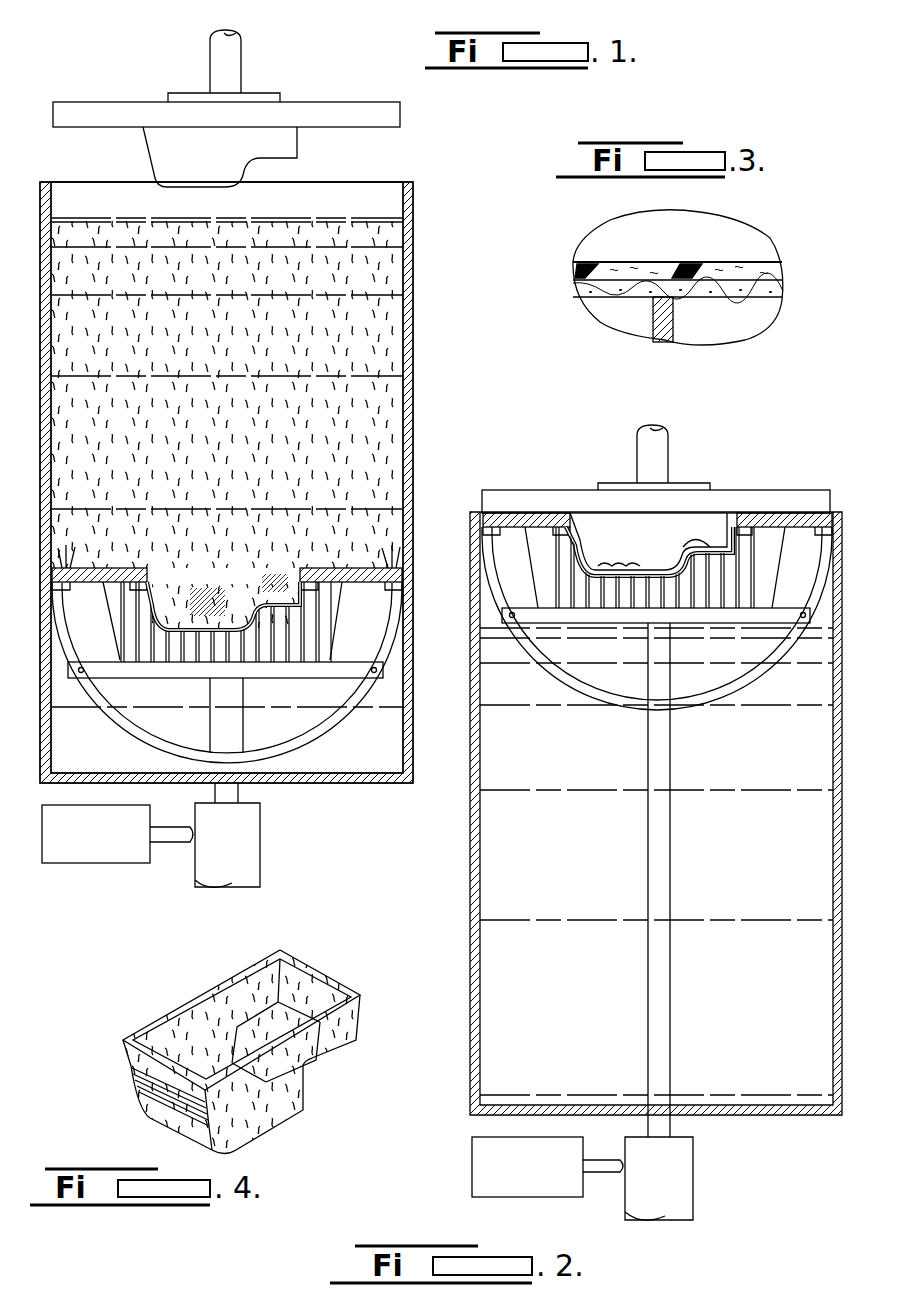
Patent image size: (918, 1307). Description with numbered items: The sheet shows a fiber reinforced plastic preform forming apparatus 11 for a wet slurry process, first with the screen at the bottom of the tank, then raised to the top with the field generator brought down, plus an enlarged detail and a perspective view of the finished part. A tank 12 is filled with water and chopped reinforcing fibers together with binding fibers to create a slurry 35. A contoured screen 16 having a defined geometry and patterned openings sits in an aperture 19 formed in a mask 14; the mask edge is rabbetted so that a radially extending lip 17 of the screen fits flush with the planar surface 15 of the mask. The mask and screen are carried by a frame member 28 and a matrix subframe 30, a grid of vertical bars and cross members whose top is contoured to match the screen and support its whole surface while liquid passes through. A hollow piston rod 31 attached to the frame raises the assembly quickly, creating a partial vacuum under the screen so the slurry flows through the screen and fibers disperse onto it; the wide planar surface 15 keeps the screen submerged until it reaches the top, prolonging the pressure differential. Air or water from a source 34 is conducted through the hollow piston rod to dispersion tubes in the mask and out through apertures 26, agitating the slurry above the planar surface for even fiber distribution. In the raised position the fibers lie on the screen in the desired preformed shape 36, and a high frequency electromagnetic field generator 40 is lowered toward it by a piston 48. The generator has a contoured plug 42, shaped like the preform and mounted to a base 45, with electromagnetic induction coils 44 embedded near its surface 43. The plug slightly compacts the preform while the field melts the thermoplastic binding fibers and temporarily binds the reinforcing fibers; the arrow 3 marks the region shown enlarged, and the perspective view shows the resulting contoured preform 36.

In FIG. 2, the section line for FIG. 3 is at (702, 533).
In FIG. 1, the molding apparatus 11 is at (442, 160).
In FIG. 1, the tank 12 is at (413, 352).
In FIG. 2, the tank 12 is at (470, 881).
In FIG. 1, the mask 14 is at (205, 622).
In FIG. 1, the planar surface 15 is at (352, 568).
In FIG. 1, the contoured screen 16 is at (152, 618).
In FIG. 3, the contoured screen 16 is at (770, 290).
In FIG. 2, the contoured screen 16 is at (735, 549).
In FIG. 1, the radially extending lip 17 is at (316, 570).
In FIG. 2, the radially extending lip 17 is at (738, 520).
In FIG. 1, the aperture 19 is at (133, 568).
In FIG. 1, the apertures 26 is at (392, 572).
In FIG. 1, the frame member 28 is at (126, 728).
In FIG. 2, the frame member 28 is at (775, 655).
In FIG. 1, the matrix subframe 30 is at (358, 620).
In FIG. 3, the matrix subframe 30 is at (662, 336).
In FIG. 2, the matrix subframe 30 is at (785, 591).
In FIG. 1, the hollow piston rod 31 is at (240, 790).
In FIG. 2, the hollow piston rod 31 is at (660, 1032).
In FIG. 1, the source 34 is at (72, 864).
In FIG. 2, the source 34 is at (472, 1157).
In FIG. 1, the slurry 35 is at (388, 318).
In FIG. 3, the preform 36 is at (780, 268).
In FIG. 2, the preform 36 is at (745, 545).
In FIG. 4, the preform 36 is at (157, 1028).
In FIG. 1, the high frequency electromagnetic field generator 40 is at (140, 70).
In FIG. 1, the contoured plug 42 is at (170, 150).
In FIG. 3, the contoured plug 42 is at (750, 245).
In FIG. 2, the contoured plug 42 is at (683, 525).
In FIG. 3, the surface 43 is at (590, 300).
In FIG. 2, the electromagnetic induction coils 44 is at (620, 566).
In FIG. 1, the base 45 is at (342, 108).
In FIG. 2, the base 45 is at (802, 496).
In FIG. 1, the piston 48 is at (235, 52).
In FIG. 2, the piston 48 is at (660, 446).